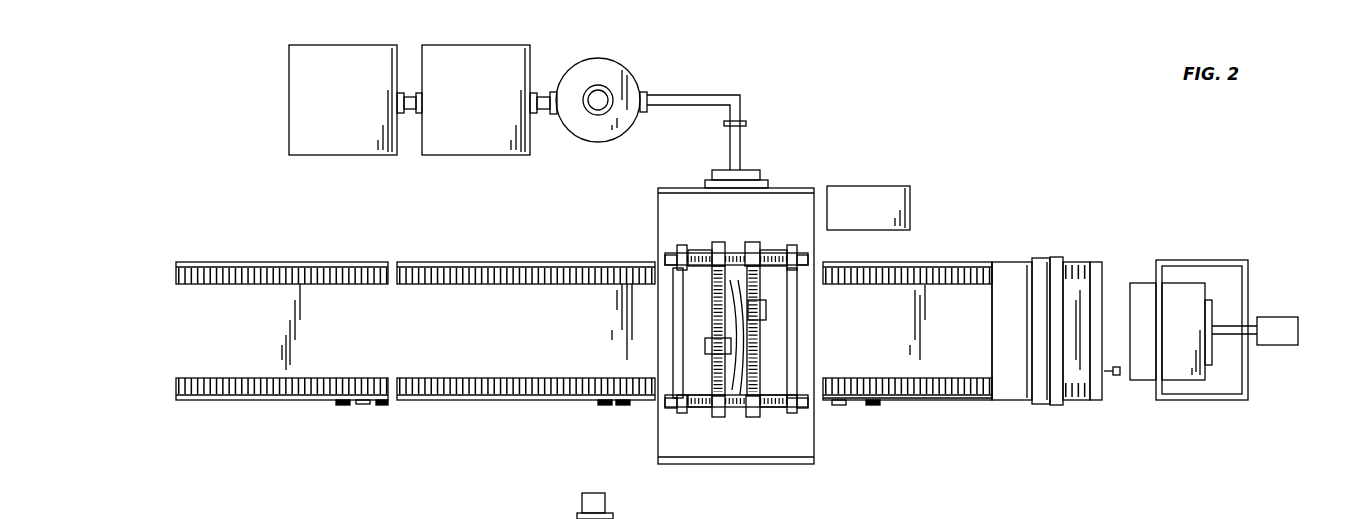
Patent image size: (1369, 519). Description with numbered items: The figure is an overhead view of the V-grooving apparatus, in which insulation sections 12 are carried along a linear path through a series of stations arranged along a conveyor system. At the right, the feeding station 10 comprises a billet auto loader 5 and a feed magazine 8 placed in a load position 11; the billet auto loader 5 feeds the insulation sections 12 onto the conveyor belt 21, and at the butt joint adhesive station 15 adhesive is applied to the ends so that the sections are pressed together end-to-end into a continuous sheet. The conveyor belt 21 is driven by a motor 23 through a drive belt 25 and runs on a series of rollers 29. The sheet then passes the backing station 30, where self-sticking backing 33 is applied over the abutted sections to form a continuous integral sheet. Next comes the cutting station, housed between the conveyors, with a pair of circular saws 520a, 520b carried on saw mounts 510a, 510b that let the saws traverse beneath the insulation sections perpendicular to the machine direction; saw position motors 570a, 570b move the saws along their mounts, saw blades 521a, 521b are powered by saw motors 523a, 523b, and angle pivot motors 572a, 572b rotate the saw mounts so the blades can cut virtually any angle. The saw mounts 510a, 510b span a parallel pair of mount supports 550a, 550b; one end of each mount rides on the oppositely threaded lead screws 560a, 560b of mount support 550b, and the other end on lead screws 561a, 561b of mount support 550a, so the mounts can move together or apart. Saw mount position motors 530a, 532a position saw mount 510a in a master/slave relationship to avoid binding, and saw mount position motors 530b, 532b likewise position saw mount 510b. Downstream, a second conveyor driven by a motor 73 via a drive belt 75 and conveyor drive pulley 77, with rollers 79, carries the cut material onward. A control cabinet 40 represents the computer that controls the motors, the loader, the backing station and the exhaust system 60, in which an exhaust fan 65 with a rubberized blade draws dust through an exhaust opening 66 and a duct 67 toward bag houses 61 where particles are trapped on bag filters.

The billet auto loader 5 is at (1300, 332).
The feed magazine 8 is at (1240, 258).
The feeding station 10 is at (1196, 235).
The load position 11 is at (1236, 300).
The insulation section 12 is at (1061, 331).
The butt joint adhesive station 15 is at (1102, 270).
The conveyor belt 21 is at (982, 401).
The motor 23 is at (878, 405).
The drive belt 25 is at (858, 405).
The rollers 29 is at (955, 401).
The backing station 30 is at (1010, 230).
The backing 33 is at (1057, 285).
The control cabinet 40 is at (850, 128).
The exhaust system 60 is at (270, 62).
The bag houses 61 is at (446, 518).
The exhaust fan 65 is at (684, 78).
The exhaust opening 66 is at (748, 176).
The duct 67 is at (733, 95).
The motor 73 is at (340, 405).
The drive belt 75 is at (363, 405).
The conveyor drive pulley 77 is at (385, 405).
The rollers 79 is at (443, 401).
The saw mount 510a is at (800, 410).
The saw mount 510b is at (712, 290).
The circular saw 520a is at (770, 312).
The circular saw 520b is at (700, 392).
The saw blade 521a is at (735, 316).
The saw blade 521b is at (760, 352).
The saw motor 523a is at (768, 315).
The saw motor 523b is at (705, 345).
The saw mount position motor 530a is at (805, 415).
The saw mount position motor 530b is at (673, 415).
The saw mount position motor 532a is at (810, 258).
The saw mount position motor 532b is at (668, 258).
The mount support 550a is at (736, 250).
The mount support 550b is at (737, 410).
The lead screw 560a is at (690, 420).
The lead screw 560b is at (665, 407).
The lead screw 561a is at (785, 252).
The lead screw 561b is at (700, 253).
The saw position motor 570a is at (758, 420).
The saw position motor 570b is at (716, 420).
The angle pivot motor 572a is at (752, 242).
The angle pivot motor 572b is at (712, 250).